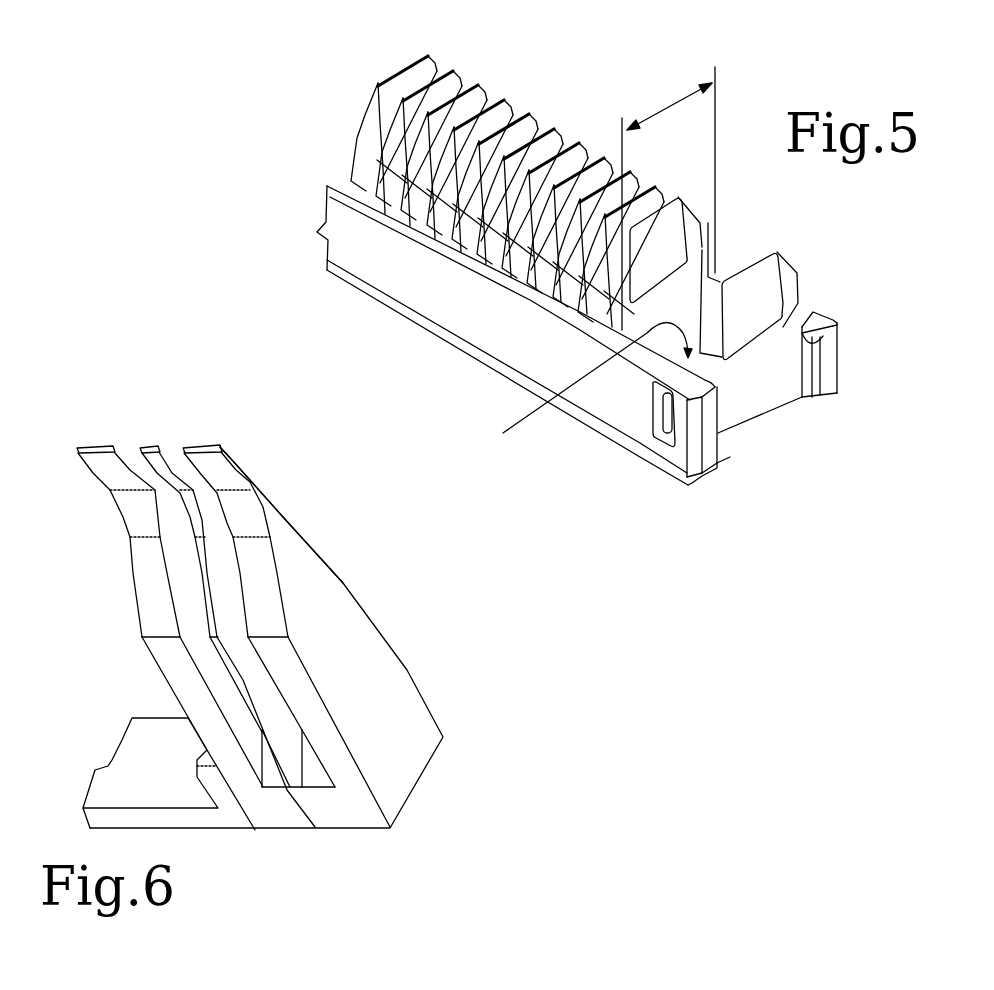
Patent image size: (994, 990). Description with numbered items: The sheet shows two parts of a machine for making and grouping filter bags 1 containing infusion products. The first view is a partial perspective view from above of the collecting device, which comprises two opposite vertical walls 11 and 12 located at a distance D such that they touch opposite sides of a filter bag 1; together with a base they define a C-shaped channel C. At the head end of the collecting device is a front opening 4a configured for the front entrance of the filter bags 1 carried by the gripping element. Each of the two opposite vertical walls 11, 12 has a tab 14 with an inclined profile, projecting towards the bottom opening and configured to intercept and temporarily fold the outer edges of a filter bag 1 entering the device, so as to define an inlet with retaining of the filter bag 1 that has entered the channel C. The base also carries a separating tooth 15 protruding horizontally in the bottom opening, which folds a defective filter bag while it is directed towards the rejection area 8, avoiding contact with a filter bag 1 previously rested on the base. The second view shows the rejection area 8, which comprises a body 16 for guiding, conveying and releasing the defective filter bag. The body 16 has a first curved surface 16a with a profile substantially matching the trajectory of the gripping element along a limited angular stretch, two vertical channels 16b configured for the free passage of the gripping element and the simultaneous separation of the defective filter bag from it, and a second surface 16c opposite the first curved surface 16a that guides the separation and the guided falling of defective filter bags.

In FIG. 5, the filter bag 1 is at (549, 127).
In FIG. 5, the front opening 4a is at (757, 430).
In FIG. 6, the rejection area 8 is at (277, 470).
In FIG. 5, the vertical wall 11 is at (637, 403).
In FIG. 5, the vertical wall 12 is at (810, 320).
In FIG. 5, the tab 14 is at (727, 437).
In FIG. 5, the separating tooth 15 is at (810, 374).
In FIG. 6, the body 16 is at (372, 697).
In FIG. 6, the first curved surface 16a is at (258, 607).
In FIG. 6, the vertical channel 16b is at (277, 722).
In FIG. 6, the second surface 16c is at (340, 581).
In FIG. 5, the channel C is at (589, 388).
In FIG. 5, the distance D is at (668, 198).